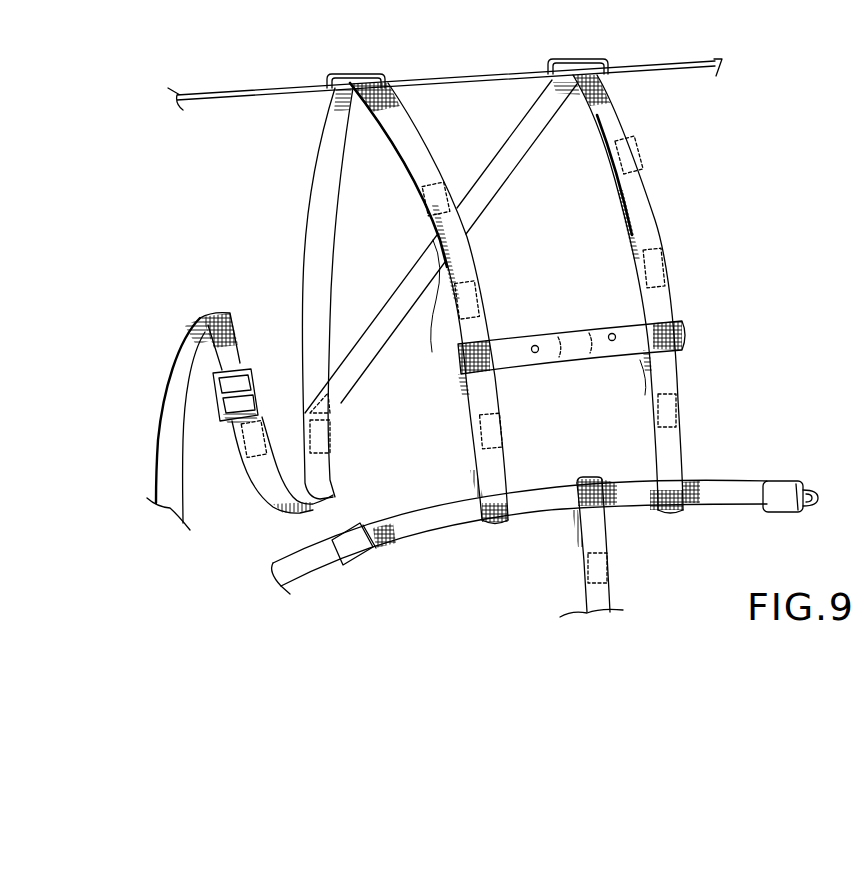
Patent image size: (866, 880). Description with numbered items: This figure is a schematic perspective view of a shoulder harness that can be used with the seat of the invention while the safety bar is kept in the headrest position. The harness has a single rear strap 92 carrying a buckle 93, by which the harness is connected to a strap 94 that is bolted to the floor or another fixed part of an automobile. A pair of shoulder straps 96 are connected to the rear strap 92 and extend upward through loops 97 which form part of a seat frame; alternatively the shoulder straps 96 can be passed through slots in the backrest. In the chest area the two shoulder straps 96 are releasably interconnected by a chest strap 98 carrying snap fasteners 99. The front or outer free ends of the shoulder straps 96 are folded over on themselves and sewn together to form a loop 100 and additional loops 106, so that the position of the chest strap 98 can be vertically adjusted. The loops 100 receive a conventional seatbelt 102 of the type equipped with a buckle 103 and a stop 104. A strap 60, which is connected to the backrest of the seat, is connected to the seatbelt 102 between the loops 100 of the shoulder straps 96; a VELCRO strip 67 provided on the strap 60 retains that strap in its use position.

The strap 60 is at (583, 601).
The VELCRO strip 67 is at (610, 571).
The rear strap 92 is at (273, 492).
The buckle 93 is at (255, 366).
The strap 94 is at (182, 365).
The shoulder straps 96 is at (407, 292).
The loops 97 is at (553, 63).
The chest strap 98 is at (567, 340).
The snap fasteners 99 is at (533, 345).
The loops 100 is at (497, 523).
The seatbelt 102 is at (413, 523).
The buckle 103 is at (767, 481).
The stop 104 is at (354, 550).
The additional loops 106 is at (457, 358).